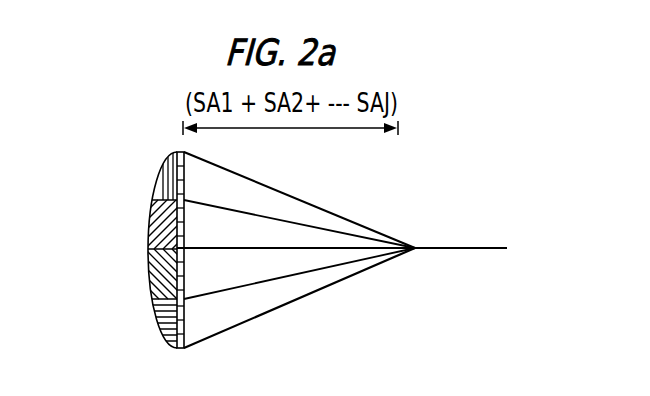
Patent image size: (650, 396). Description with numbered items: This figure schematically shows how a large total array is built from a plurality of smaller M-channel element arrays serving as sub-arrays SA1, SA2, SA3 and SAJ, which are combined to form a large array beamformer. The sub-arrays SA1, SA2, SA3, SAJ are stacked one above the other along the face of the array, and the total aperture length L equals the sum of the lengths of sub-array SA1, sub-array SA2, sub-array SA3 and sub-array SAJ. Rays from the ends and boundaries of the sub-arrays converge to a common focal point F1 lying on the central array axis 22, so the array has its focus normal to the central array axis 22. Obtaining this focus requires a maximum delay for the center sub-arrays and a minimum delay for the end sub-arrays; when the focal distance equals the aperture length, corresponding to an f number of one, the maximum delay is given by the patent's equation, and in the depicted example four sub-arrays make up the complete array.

The central array axis 22 is at (468, 244).
The focal point F1 is at (316, 250).
The sub-array SA1 is at (176, 152).
The sub-array SA2 is at (152, 200).
The sub-array SA3 is at (149, 249).
The sub-array SAJ is at (176, 348).